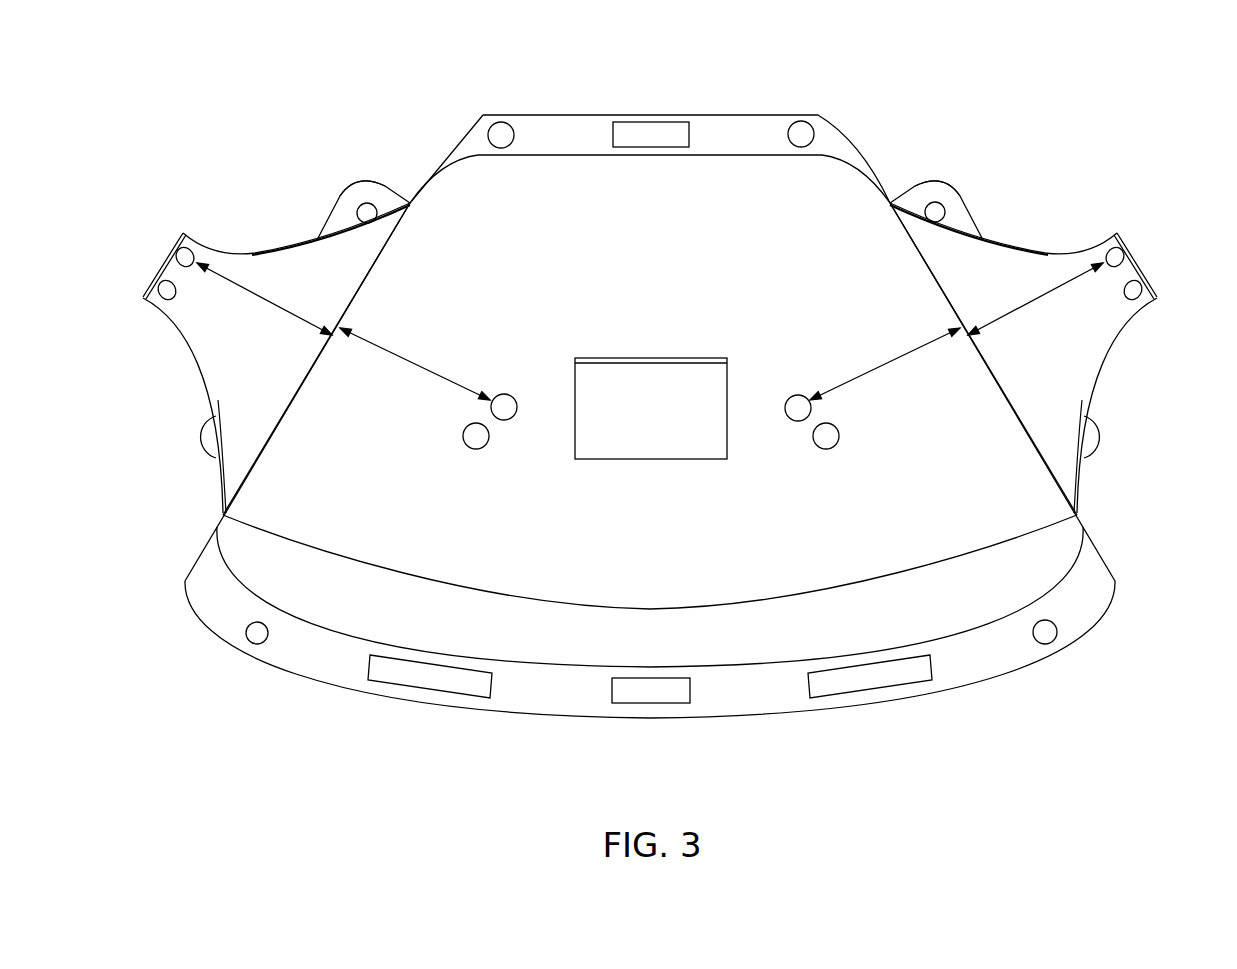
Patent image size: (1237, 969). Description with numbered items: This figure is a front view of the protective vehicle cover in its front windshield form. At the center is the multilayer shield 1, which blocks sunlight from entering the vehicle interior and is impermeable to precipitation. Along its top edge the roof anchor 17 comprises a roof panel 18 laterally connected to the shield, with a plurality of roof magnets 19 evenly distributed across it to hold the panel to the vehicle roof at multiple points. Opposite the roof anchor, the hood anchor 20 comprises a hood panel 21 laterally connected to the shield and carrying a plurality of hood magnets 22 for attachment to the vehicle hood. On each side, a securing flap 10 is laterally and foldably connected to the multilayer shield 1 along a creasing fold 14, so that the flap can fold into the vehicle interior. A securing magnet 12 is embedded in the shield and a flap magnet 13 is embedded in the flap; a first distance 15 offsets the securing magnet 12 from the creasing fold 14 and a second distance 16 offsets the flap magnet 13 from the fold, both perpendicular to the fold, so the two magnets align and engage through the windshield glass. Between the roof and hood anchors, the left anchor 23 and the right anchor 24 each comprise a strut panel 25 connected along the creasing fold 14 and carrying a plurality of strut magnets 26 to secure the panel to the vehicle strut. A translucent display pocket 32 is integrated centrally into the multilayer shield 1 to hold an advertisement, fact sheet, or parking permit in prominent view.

The multilayer shield 1 is at (644, 254).
The securing flap 10 is at (270, 257).
The securing magnet 12 is at (506, 416).
The flap magnet 13 is at (189, 265).
The creasing fold 14 is at (384, 257).
The first distance 15 is at (415, 362).
The second distance 16 is at (275, 306).
The roof anchor 17 is at (455, 110).
The roof panel 18 is at (722, 119).
The roof magnets 19 is at (506, 142).
The hood anchor 20 is at (1125, 592).
The hood panel 21 is at (735, 708).
The hood magnets 22 is at (268, 633).
The left anchor 23 is at (944, 175).
The right anchor 24 is at (335, 195).
The strut panel 25 is at (368, 187).
The strut magnets 26 is at (370, 207).
The display pocket 32 is at (653, 458).